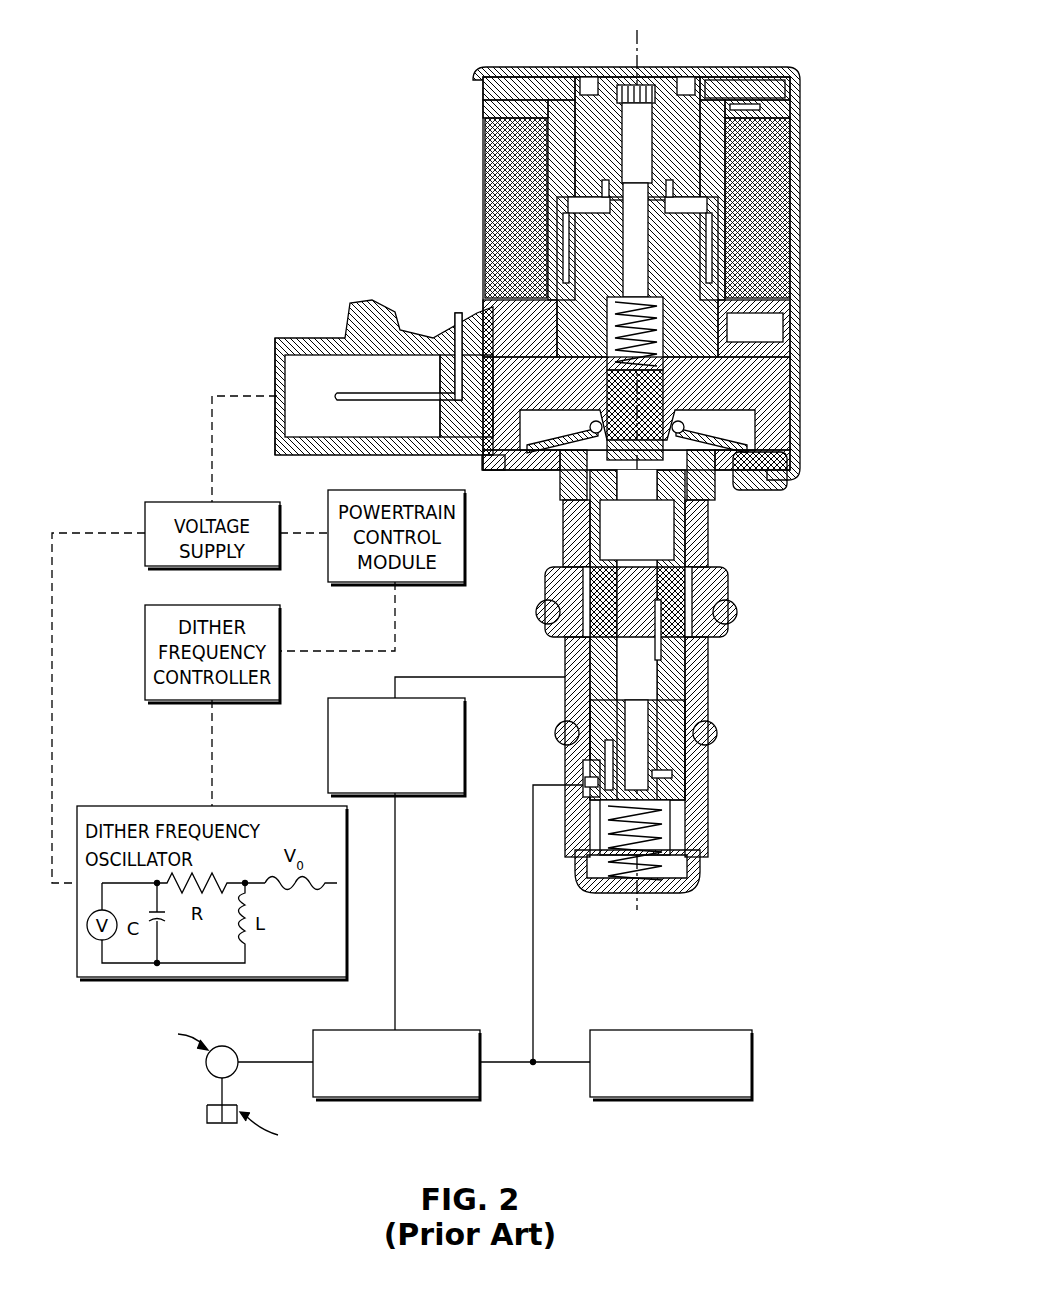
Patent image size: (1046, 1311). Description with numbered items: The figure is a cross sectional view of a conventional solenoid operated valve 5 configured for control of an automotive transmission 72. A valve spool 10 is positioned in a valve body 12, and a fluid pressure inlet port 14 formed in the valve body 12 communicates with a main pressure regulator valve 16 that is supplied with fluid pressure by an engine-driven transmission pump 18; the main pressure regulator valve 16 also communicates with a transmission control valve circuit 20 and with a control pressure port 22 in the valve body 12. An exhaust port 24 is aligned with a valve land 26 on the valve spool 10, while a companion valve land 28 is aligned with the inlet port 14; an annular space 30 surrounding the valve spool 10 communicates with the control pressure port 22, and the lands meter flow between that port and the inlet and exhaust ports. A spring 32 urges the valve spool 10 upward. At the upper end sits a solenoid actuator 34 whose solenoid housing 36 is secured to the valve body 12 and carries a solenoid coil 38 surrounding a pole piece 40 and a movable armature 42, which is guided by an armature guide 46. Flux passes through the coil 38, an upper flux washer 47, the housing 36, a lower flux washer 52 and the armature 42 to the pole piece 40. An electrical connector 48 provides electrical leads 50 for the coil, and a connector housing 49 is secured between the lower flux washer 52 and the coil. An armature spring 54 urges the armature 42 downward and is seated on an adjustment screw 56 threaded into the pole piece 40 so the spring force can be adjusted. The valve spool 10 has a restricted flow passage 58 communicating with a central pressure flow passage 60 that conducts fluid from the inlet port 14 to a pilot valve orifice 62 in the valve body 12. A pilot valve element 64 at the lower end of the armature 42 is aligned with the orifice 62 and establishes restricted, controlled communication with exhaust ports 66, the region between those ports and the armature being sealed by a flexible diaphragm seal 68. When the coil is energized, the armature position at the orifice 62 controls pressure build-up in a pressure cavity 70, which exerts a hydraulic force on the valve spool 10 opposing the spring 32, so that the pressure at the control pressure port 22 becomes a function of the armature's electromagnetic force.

The solenoid operated valve 5 is at (370, 229).
The valve spool 10 is at (573, 752).
The valve body 12 is at (550, 592).
The fluid pressure inlet port 14 is at (580, 782).
The main pressure regulator valve 16 is at (440, 1030).
The transmission pump 18 is at (210, 1072).
The transmission control valve circuit 20 is at (328, 748).
The control pressure port 22 is at (577, 680).
The exhaust port 24 is at (578, 562).
The valve land 26 is at (693, 550).
The companion valve land 28 is at (690, 770).
The annular space 30 is at (595, 618).
The spring 32 is at (693, 863).
The solenoid actuator 34 is at (471, 70).
The solenoid housing 36 is at (483, 96).
The solenoid coil 38 is at (795, 257).
The pole piece 40 is at (700, 80).
The movable armature 42 is at (693, 283).
The armature guide 46 is at (800, 197).
The upper flux washer 47 is at (740, 88).
The electrical connector 48 is at (308, 340).
The connector housing 49 is at (277, 352).
The electrical leads 50 is at (378, 393).
The lower flux washer 52 is at (507, 413).
The armature spring 54 is at (560, 290).
The adjustment screw 56 is at (587, 130).
The restricted flow passage 58 is at (665, 782).
The central pressure flow passage 60 is at (653, 633).
The pilot valve orifice 62 is at (752, 490).
The pilot valve element 64 is at (637, 419).
The exhaust ports 66 is at (548, 490).
The flexible diaphragm seal 68 is at (730, 433).
The pressure cavity 70 is at (702, 507).
The automotive transmission 72 is at (715, 1030).